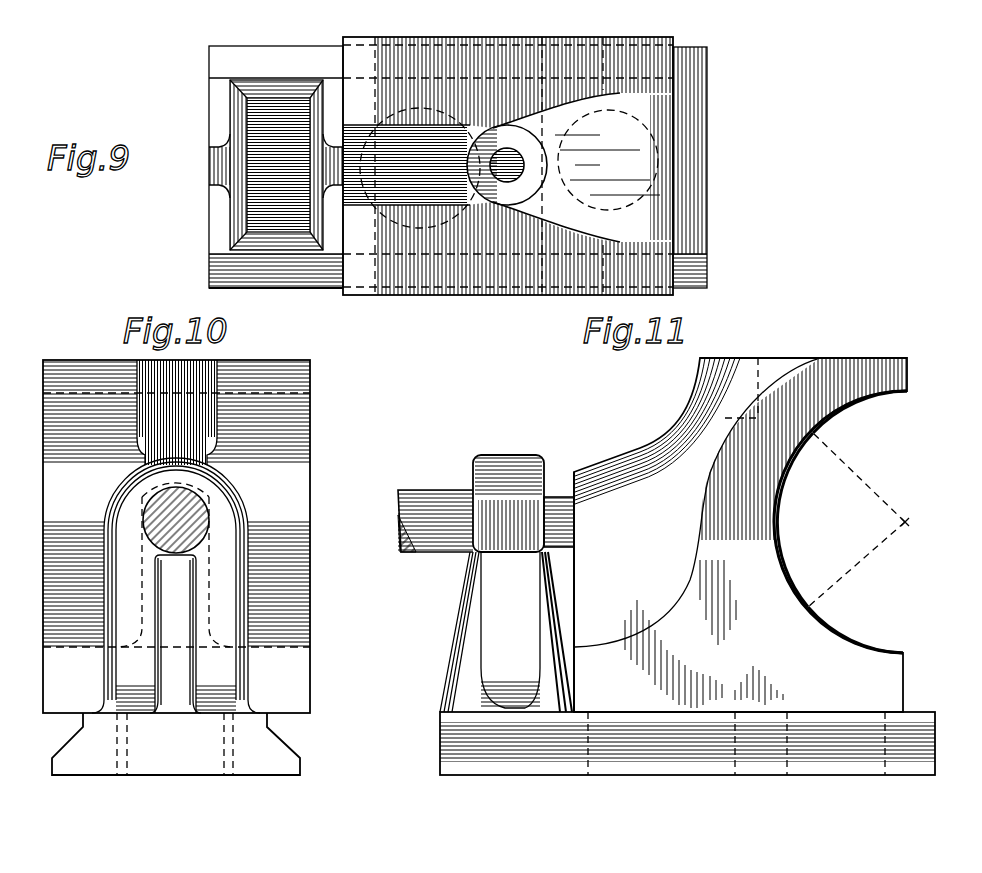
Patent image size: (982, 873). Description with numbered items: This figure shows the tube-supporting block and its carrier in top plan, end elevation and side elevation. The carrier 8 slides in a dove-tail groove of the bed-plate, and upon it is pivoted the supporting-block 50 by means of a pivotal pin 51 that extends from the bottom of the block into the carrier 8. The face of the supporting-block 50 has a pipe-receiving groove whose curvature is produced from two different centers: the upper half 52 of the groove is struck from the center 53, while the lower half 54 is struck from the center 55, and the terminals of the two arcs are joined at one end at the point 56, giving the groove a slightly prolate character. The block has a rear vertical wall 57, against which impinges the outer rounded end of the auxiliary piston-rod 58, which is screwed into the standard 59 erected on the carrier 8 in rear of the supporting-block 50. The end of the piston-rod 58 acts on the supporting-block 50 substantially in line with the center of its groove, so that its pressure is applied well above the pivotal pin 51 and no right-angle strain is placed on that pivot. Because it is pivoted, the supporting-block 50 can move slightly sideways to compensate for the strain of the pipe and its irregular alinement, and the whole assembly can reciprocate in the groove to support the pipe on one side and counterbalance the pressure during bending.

In FIG. 9, the carrier 8 is at (313, 267).
In FIG. 10, the carrier 8 is at (278, 748).
In FIG. 11, the carrier 8 is at (447, 742).
In FIG. 9, the supporting-block 50 is at (651, 236).
In FIG. 10, the supporting-block 50 is at (304, 419).
In FIG. 11, the supporting-block 50 is at (803, 365).
In FIG. 9, the pivotal pin 51 is at (648, 141).
In FIG. 10, the pivotal pin 51 is at (118, 742).
In FIG. 11, the pivotal pin 51 is at (790, 722).
In FIG. 11, the upper half of groove 52 is at (838, 410).
In FIG. 11, the center 53 is at (907, 524).
In FIG. 11, the lower half of groove 54 is at (876, 643).
In FIG. 11, the center 55 is at (906, 521).
In FIG. 11, the point 56 is at (775, 513).
In FIG. 9, the rear vertical wall 57 is at (366, 205).
In FIG. 11, the rear vertical wall 57 is at (574, 484).
In FIG. 9, the auxiliary piston-rod 58 is at (507, 165).
In FIG. 10, the auxiliary piston-rod 58 is at (207, 507).
In FIG. 11, the auxiliary piston-rod 58 is at (426, 495).
In FIG. 9, the standard 59 is at (258, 180).
In FIG. 10, the standard 59 is at (118, 552).
In FIG. 11, the standard 59 is at (492, 583).